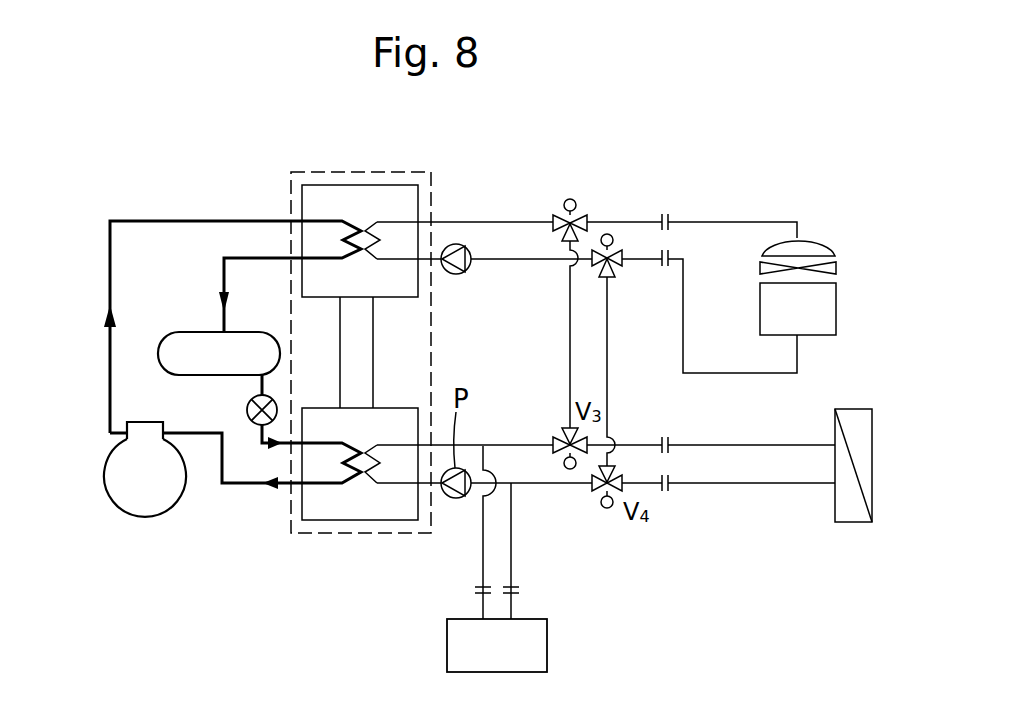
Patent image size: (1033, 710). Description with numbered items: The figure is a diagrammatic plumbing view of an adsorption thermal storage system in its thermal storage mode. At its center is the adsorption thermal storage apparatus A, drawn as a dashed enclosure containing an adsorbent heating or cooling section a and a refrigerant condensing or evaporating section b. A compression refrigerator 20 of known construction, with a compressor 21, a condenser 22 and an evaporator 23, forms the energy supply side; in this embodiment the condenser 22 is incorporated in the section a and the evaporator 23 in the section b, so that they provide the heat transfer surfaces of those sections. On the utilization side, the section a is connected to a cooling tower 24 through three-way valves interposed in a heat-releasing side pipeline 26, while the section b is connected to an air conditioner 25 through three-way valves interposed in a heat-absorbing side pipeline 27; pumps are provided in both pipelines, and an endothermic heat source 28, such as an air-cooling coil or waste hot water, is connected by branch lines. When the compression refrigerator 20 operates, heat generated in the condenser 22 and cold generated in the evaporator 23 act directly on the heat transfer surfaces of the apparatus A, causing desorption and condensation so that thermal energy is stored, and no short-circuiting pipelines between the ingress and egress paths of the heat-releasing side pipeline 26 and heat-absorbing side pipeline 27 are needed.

The compression refrigerator 20 is at (146, 297).
The compressor 21 is at (138, 420).
The condenser 22 is at (350, 218).
The evaporator 23 is at (343, 487).
The cooling tower 24 is at (840, 276).
The air conditioner 25 is at (853, 407).
The heat-releasing side pipeline 26 is at (477, 222).
The heat-absorbing side pipeline 27 is at (501, 486).
The endothermic heat source 28 is at (548, 643).
The adsorbent heating or cooling section a is at (361, 190).
The refrigerant condensing or evaporating section b is at (357, 512).
The adsorption thermal storage apparatus A is at (432, 336).